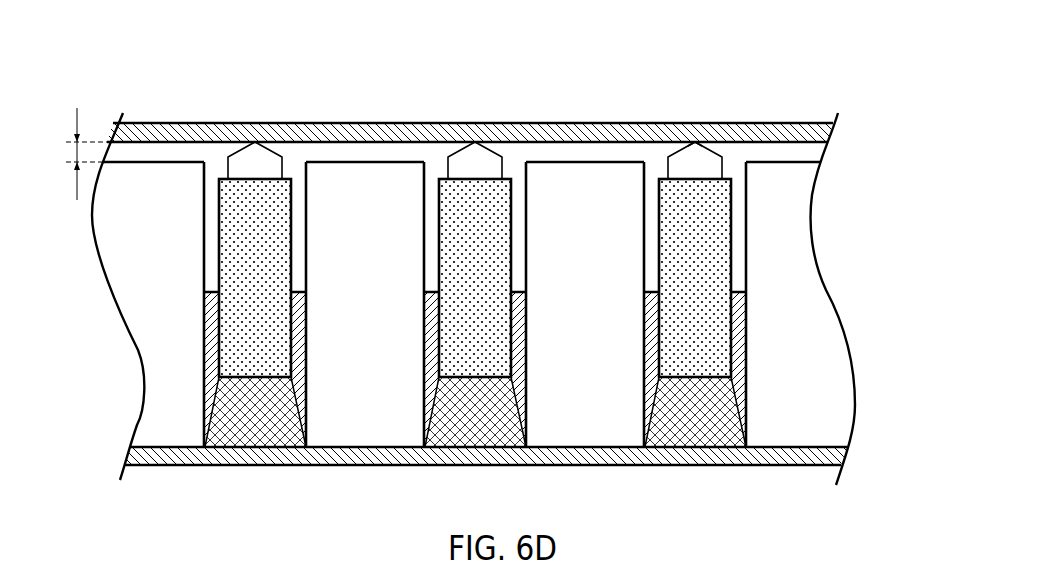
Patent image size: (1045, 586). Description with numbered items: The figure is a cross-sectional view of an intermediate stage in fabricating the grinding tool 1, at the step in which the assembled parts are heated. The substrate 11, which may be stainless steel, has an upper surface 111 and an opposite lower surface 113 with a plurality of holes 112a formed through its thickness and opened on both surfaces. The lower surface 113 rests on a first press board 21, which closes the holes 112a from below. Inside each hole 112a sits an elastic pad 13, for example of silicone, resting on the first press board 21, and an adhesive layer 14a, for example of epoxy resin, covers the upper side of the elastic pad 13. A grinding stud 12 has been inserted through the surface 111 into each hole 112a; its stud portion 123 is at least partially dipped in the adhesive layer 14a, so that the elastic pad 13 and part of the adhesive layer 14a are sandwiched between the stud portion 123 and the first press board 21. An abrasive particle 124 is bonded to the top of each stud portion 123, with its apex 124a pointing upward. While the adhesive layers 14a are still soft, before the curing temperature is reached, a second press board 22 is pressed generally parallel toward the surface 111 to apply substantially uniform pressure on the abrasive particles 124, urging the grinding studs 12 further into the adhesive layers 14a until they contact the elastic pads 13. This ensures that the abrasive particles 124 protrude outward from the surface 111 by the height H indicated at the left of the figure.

The grinding tool 1 is at (146, 65).
The substrate 11 is at (498, 287).
The surface 111 is at (788, 162).
The hole 112a is at (653, 175).
The surface 113 is at (786, 463).
The grinding stud 12 is at (553, 212).
The stud portion 123 is at (713, 257).
The abrasive particle 124 is at (698, 138).
The apex of lens portion 124a is at (692, 140).
The elastic pad 13 is at (748, 381).
The adhesive layer 14a is at (747, 338).
The first press board 21 is at (845, 455).
The second press board 22 is at (824, 131).